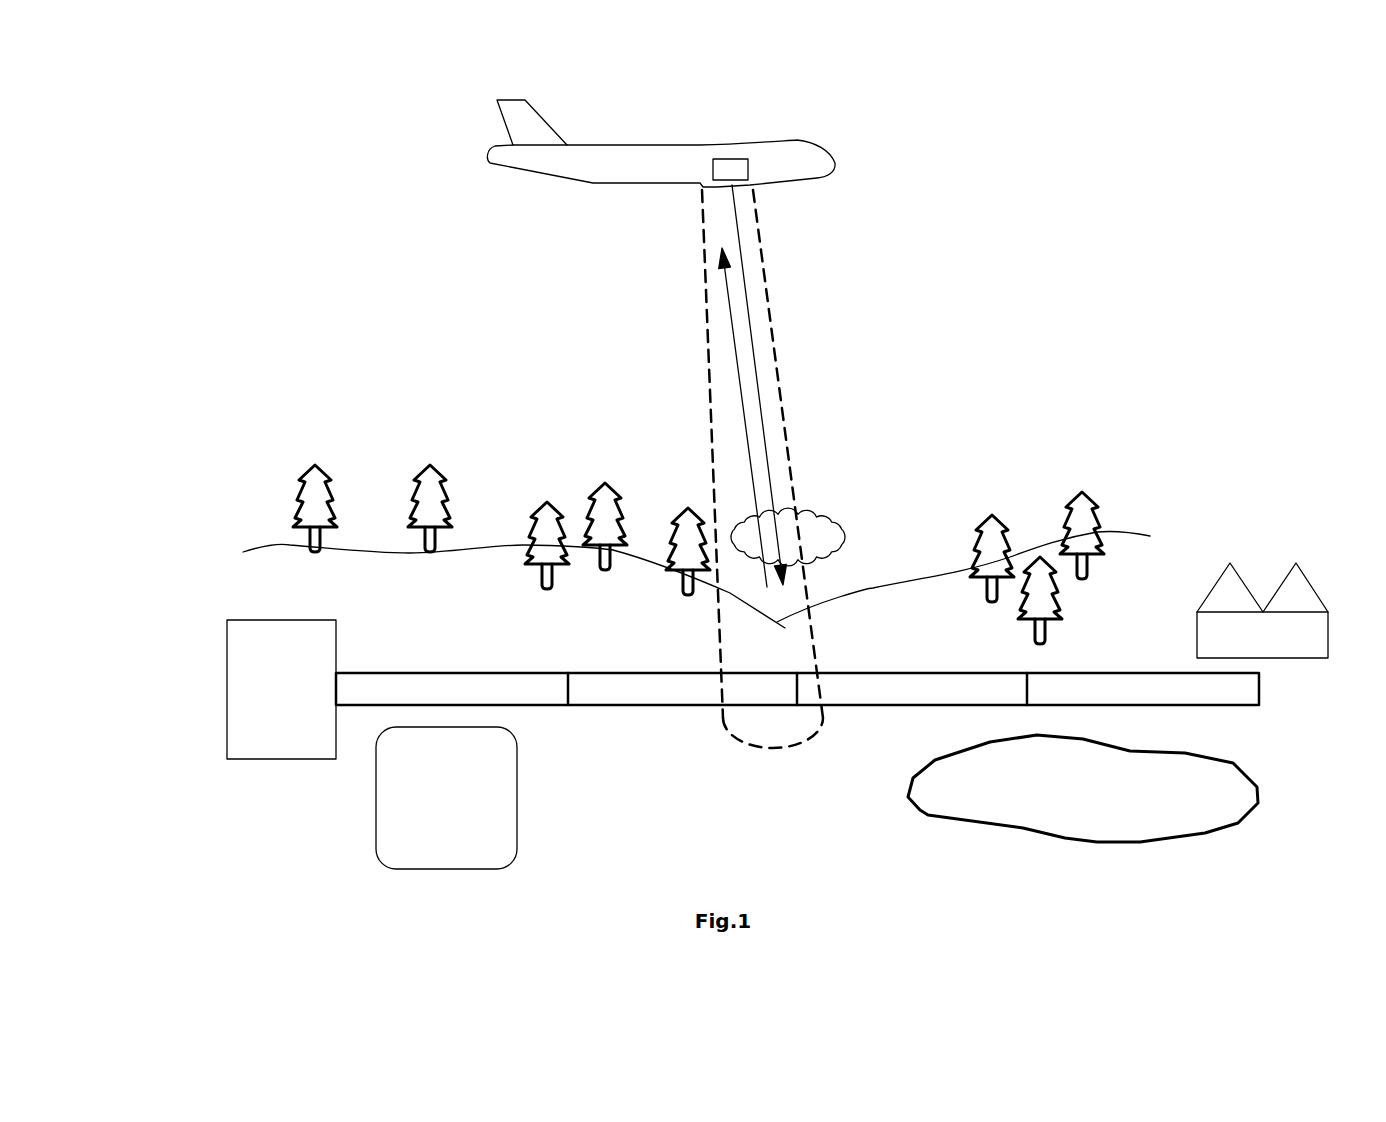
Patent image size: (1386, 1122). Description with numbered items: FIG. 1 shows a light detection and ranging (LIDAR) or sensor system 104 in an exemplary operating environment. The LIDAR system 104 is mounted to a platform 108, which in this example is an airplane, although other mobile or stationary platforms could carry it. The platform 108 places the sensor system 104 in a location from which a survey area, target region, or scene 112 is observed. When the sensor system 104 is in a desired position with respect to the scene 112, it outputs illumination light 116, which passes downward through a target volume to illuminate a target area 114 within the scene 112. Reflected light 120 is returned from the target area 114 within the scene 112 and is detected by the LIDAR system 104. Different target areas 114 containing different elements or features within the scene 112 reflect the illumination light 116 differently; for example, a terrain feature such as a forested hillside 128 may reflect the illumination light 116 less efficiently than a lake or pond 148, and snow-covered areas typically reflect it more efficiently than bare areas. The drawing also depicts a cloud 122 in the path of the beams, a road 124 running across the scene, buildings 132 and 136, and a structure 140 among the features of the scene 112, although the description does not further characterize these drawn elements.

The LIDAR system 104 is at (736, 159).
The platform 108 is at (641, 147).
The scene 112 is at (1018, 440).
The target area 114 is at (803, 738).
The illumination light 116 is at (753, 347).
The reflected light 120 is at (726, 298).
The cloud / obscurant 122 is at (817, 513).
The road 124 is at (200, 695).
The forested hillside 128 is at (597, 487).
The building 132 is at (272, 760).
The industrial building 136 is at (1317, 658).
The structure 140 is at (375, 848).
The lake or pond 148 is at (1038, 823).